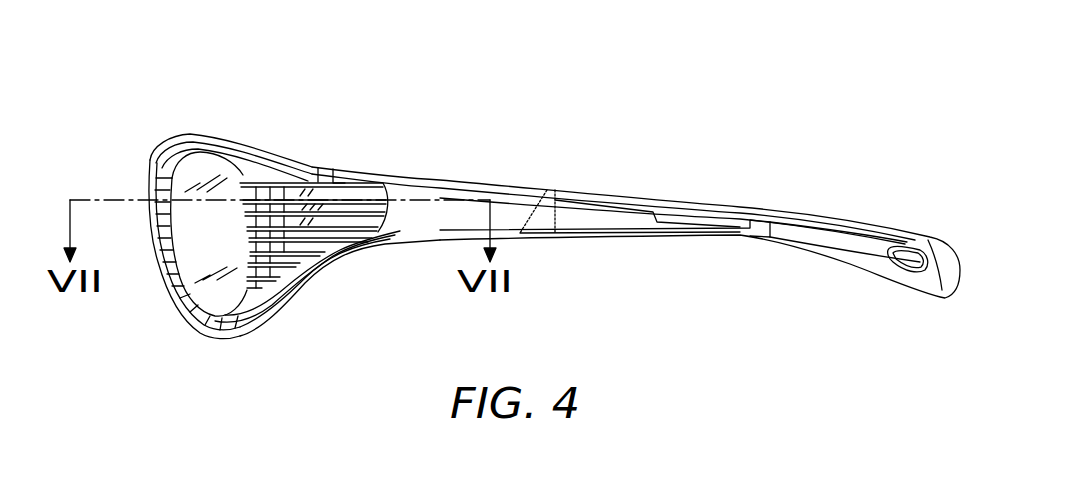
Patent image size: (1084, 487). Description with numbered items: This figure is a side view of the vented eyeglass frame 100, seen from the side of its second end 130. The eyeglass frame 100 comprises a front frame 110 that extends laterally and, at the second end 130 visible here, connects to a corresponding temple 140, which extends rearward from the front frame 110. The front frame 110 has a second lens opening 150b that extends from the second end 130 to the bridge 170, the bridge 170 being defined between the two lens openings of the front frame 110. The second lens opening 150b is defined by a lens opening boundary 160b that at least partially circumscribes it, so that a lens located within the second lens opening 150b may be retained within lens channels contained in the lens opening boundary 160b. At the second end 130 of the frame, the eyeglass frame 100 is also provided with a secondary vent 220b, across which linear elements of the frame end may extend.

The eyeglass frame 100 is at (272, 72).
The front frame 110 is at (176, 137).
The second end 130 is at (306, 174).
The temple 140 is at (388, 242).
The second lens opening 150b is at (217, 300).
The lens opening boundary 160b is at (230, 338).
The bridge 170 is at (151, 167).
The secondary vent 220b is at (283, 237).